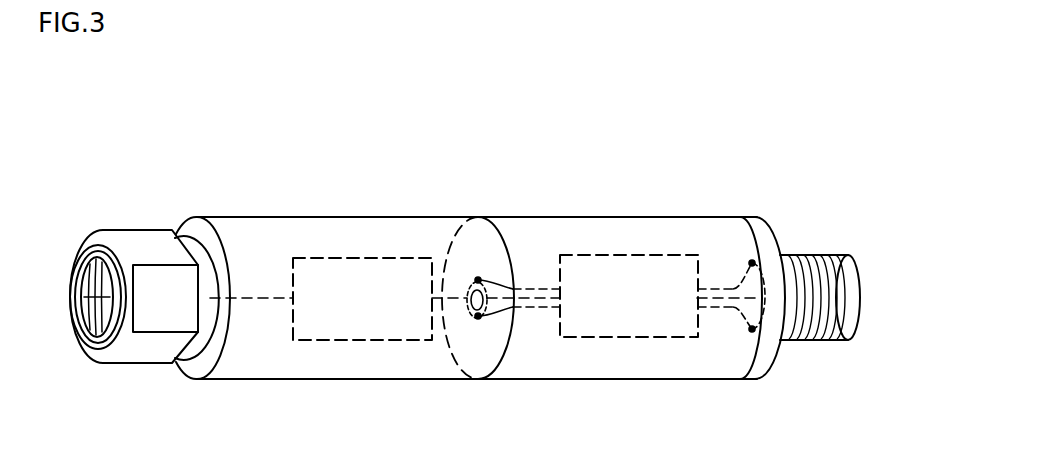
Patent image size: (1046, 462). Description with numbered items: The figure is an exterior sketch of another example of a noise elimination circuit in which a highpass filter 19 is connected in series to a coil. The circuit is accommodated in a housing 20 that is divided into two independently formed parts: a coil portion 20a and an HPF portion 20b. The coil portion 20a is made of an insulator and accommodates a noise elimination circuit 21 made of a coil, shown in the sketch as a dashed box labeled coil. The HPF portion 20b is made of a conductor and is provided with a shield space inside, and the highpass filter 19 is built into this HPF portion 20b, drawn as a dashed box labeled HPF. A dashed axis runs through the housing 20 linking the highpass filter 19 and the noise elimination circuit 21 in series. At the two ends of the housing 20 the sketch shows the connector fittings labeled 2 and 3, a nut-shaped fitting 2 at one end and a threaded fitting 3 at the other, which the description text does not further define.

The connector nut 2 is at (90, 250).
The threaded connector 3 is at (821, 253).
The highpass filter 19 is at (368, 340).
The housing 20 is at (447, 225).
The coil portion 20a is at (658, 222).
The HPF portion 20b is at (338, 220).
The noise elimination circuit 21 is at (625, 337).